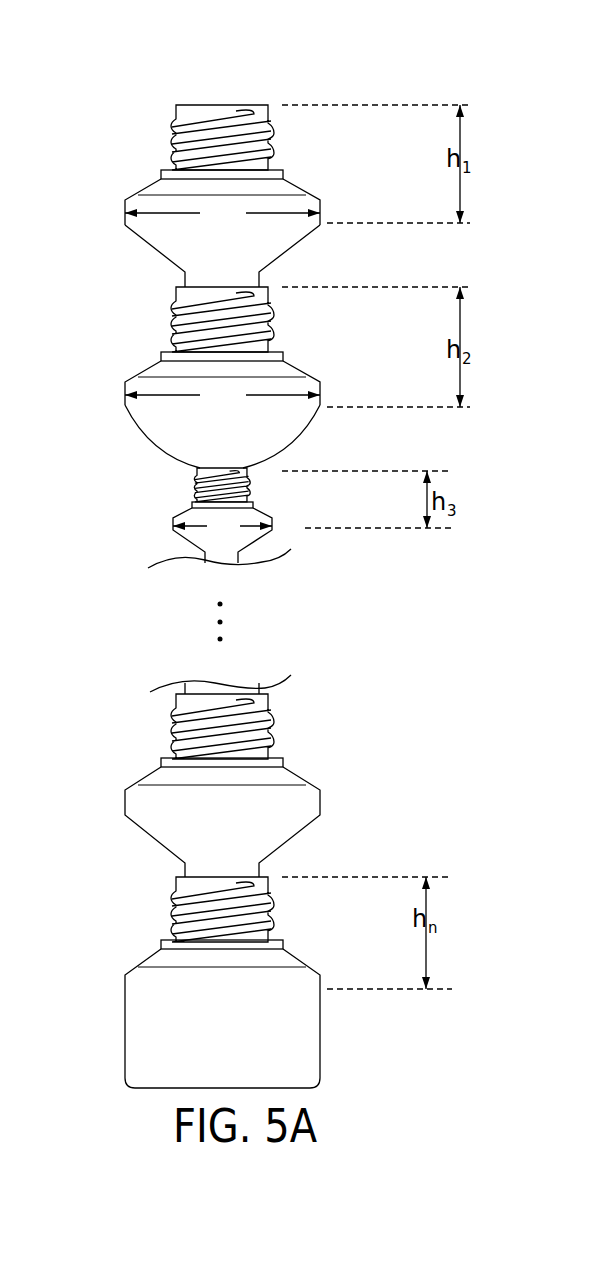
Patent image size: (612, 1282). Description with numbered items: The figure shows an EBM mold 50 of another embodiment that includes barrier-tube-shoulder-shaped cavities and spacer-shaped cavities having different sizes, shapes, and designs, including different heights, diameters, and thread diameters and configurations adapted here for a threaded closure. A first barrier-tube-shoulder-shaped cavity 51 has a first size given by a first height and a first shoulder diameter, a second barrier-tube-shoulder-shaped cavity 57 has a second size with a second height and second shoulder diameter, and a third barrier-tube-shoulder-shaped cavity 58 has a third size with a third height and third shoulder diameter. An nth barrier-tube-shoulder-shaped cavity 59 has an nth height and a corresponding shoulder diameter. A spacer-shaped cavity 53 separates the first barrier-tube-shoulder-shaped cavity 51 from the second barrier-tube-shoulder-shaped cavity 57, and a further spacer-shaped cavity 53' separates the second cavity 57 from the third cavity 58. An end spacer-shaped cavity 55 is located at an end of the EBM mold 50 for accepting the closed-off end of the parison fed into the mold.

The EBM mold 50 is at (96, 88).
The first barrier-tube-shoulder-shaped cavity 51 is at (115, 107).
The spacer-shaped cavity 53 is at (186, 256).
The second barrier-tube-shoulder-shaped cavity 57 is at (115, 289).
The spacer-shaped cavity 53' is at (185, 437).
The third barrier-tube-shoulder-shaped cavity 58 is at (158, 472).
The nth barrier-tube-shoulder-shaped cavity 59 is at (115, 862).
The end spacer-shaped cavity 55 is at (115, 968).